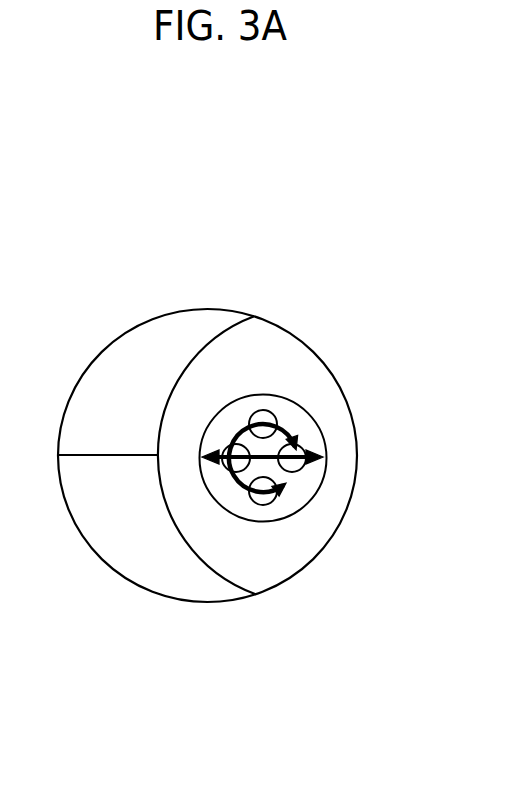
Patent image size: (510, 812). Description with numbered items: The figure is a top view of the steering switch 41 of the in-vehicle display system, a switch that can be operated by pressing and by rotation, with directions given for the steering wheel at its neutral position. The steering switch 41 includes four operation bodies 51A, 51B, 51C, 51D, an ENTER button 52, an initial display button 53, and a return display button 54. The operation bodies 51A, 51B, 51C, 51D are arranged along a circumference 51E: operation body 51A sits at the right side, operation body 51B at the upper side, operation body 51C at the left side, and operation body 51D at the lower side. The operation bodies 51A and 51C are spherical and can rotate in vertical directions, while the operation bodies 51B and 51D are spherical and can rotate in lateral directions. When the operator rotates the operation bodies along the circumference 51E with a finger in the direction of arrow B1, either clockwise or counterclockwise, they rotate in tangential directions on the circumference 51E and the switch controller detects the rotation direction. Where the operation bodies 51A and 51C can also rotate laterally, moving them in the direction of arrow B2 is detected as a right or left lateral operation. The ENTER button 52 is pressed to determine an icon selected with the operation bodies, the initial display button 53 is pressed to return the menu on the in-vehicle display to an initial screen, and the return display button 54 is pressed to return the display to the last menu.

The steering switch 41 is at (313, 350).
The initial display button 53 is at (83, 397).
The return display button 54 is at (82, 485).
The ENTER button 52 is at (290, 502).
The operation body 51A is at (300, 465).
The operation body 51B is at (262, 418).
The operation body 51C is at (227, 463).
The operation body 51D is at (262, 500).
The circumference 51E is at (287, 478).
The arrow B1 is at (290, 440).
The arrow B2 is at (320, 455).